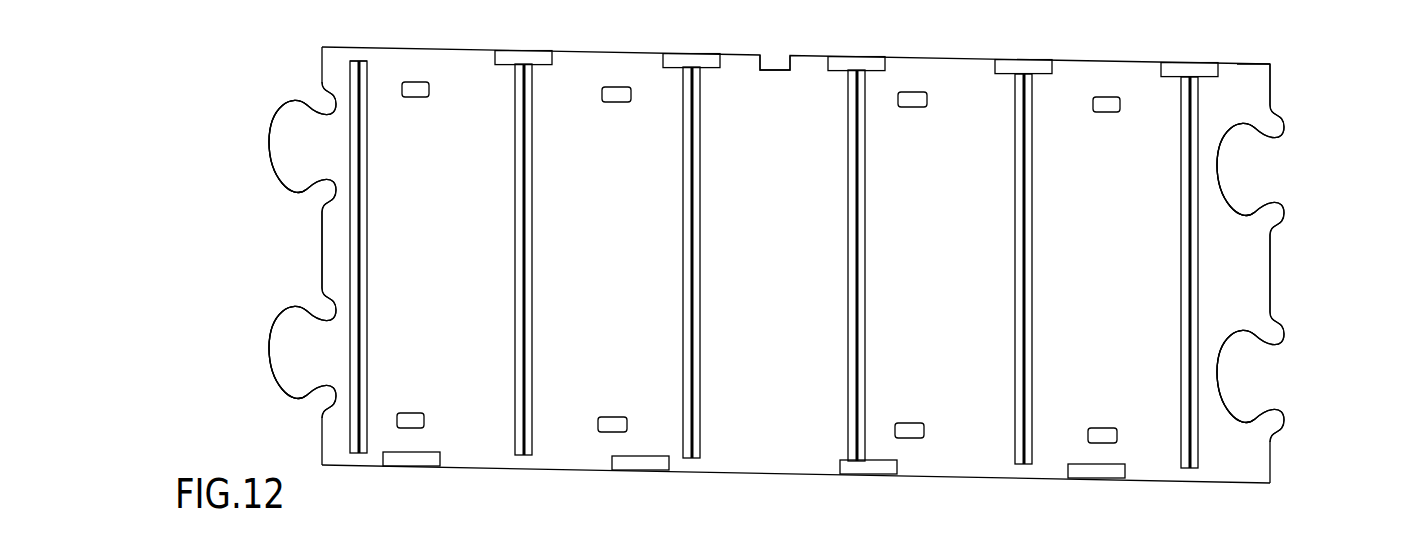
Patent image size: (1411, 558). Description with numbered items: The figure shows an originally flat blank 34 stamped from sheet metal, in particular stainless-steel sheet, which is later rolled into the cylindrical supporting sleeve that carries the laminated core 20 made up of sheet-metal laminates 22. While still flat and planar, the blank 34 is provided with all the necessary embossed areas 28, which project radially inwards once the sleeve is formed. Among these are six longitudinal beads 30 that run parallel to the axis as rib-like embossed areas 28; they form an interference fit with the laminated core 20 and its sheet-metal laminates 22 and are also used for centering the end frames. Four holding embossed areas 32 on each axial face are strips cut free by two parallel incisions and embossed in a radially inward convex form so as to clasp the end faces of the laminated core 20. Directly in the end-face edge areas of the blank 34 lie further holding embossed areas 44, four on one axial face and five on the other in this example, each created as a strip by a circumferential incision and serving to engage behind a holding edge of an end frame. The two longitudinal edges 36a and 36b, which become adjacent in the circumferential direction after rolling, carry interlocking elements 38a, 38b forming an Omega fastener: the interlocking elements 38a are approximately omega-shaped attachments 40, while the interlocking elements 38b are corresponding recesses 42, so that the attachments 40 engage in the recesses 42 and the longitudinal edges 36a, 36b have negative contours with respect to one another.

The laminated core 20 is at (776, 241).
The sheet-metal laminates 22 is at (878, 35).
The embossed areas 28 is at (513, 122).
The longitudinal beads 30 is at (515, 286).
The holding embossed areas 32 is at (415, 97).
The blank 34 is at (1237, 93).
The longitudinal edge 36a is at (318, 256).
The longitudinal edge 36b is at (1277, 278).
The interlocking elements 38a is at (287, 95).
The interlocking elements 38b is at (1260, 145).
The attachments 40 is at (285, 130).
The recesses 42 is at (1220, 185).
The holding embossed areas 44 is at (693, 60).